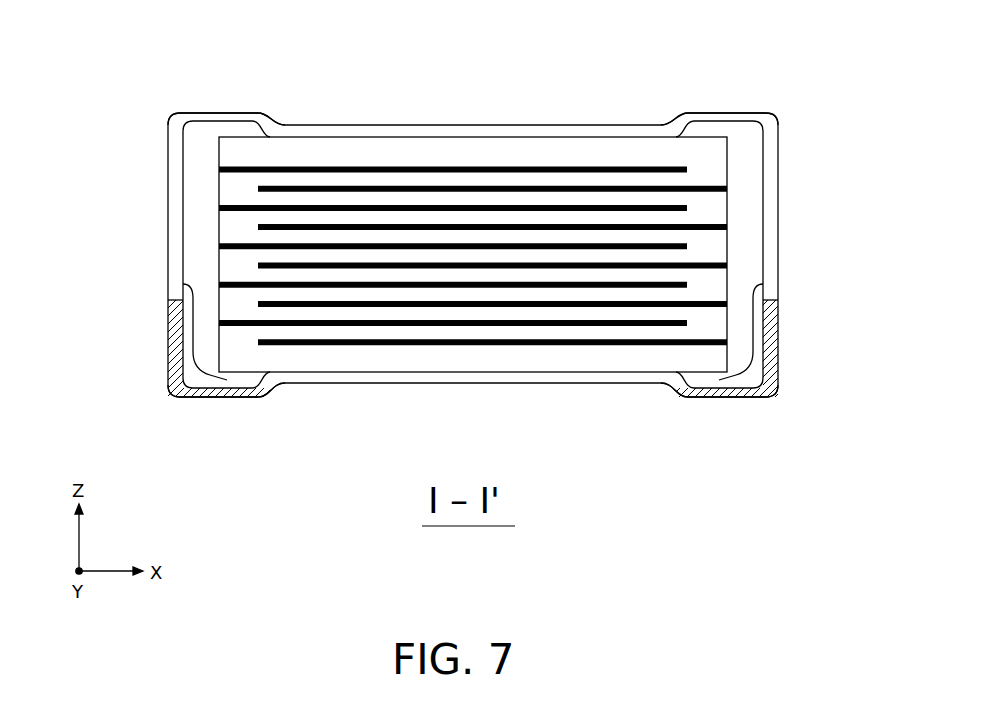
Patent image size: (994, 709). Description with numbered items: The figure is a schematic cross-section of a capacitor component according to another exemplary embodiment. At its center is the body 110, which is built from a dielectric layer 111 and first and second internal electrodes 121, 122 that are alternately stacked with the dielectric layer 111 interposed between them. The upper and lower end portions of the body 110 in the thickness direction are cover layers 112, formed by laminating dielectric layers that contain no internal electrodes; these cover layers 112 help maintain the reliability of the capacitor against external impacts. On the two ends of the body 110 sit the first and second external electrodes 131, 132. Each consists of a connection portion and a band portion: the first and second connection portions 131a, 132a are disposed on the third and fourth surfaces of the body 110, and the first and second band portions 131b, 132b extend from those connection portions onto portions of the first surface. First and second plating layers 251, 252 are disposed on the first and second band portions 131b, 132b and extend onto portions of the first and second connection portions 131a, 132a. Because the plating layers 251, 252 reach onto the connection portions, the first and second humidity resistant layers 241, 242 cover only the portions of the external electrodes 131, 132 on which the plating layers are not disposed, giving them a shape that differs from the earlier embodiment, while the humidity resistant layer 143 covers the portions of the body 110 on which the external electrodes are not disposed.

The body 110 is at (620, 125).
The dielectric layer 111 is at (270, 178).
The cover layers 112 is at (545, 157).
The first internal electrode 121 is at (324, 167).
The second internal electrode 122 is at (383, 186).
The first external electrode 131 is at (82, 220).
The first connection portion 131a is at (205, 233).
The first band portion 131b is at (183, 284).
The second external electrode 132 is at (858, 218).
The second connection portion 132a is at (740, 235).
The second band portion 132b is at (763, 284).
The humidity resistant layer 143 is at (475, 131).
The first humidity resistant layer 241 is at (224, 115).
The second humidity resistant layer 242 is at (718, 115).
The first plating layer 251 is at (225, 396).
The second plating layer 252 is at (715, 396).